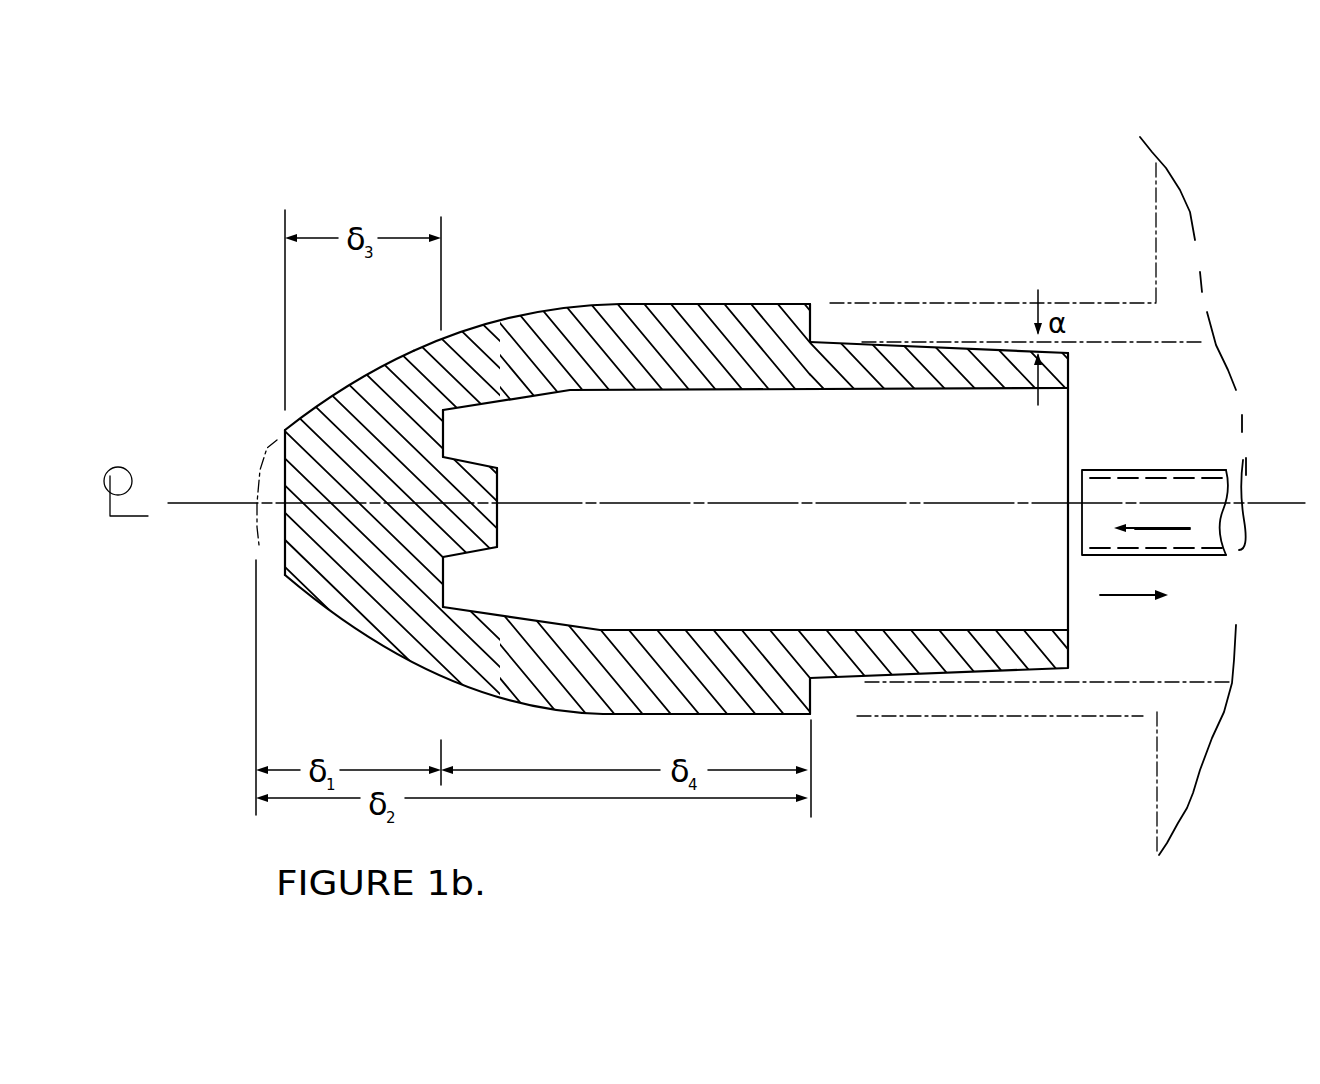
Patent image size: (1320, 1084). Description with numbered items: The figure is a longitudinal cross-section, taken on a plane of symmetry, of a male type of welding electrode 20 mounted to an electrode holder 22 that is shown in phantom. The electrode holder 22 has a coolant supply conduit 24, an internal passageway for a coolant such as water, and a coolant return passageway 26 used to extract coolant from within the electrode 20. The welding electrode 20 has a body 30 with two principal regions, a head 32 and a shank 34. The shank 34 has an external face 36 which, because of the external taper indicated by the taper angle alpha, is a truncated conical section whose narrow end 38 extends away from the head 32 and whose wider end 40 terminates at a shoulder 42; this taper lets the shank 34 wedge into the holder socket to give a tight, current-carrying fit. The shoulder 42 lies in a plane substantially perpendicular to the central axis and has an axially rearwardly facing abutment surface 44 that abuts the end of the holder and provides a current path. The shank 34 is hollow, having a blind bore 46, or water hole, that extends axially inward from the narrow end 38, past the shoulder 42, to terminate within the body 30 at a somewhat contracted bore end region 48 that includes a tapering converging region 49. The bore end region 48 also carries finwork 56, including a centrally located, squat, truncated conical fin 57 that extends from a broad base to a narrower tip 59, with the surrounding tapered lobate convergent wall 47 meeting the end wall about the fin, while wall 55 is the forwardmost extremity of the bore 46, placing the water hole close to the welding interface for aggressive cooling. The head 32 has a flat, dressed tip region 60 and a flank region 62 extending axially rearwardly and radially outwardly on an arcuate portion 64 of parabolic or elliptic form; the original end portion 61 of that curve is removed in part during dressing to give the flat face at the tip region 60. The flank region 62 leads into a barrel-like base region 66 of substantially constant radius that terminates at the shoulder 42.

The welding electrode 20 is at (222, 165).
The electrode holder 22 is at (1154, 189).
The coolant supply conduit 24 is at (1176, 470).
The coolant return passageway 26 is at (1235, 598).
The body 30 is at (733, 305).
The head 32 is at (384, 375).
The shank 34 is at (852, 360).
The external face 36 is at (907, 347).
The narrow end 38 is at (1075, 374).
The wider end 40 is at (826, 680).
The shoulder 42 is at (814, 716).
The abutment surface 44 is at (824, 328).
The bore 46 is at (1028, 430).
The tapered lobate convergent wall 47 is at (519, 432).
The bore end region 48 is at (470, 410).
The converging region 49 is at (490, 615).
The wall 55 is at (450, 600).
The finwork 56 is at (497, 547).
The fin 57 is at (483, 552).
The tip 59 is at (497, 553).
The tip region 60 is at (280, 443).
The end portion 61 is at (280, 578).
The flank region 62 is at (416, 350).
The arcuate portion 64 is at (346, 383).
The barrel-like base region 66 is at (680, 305).